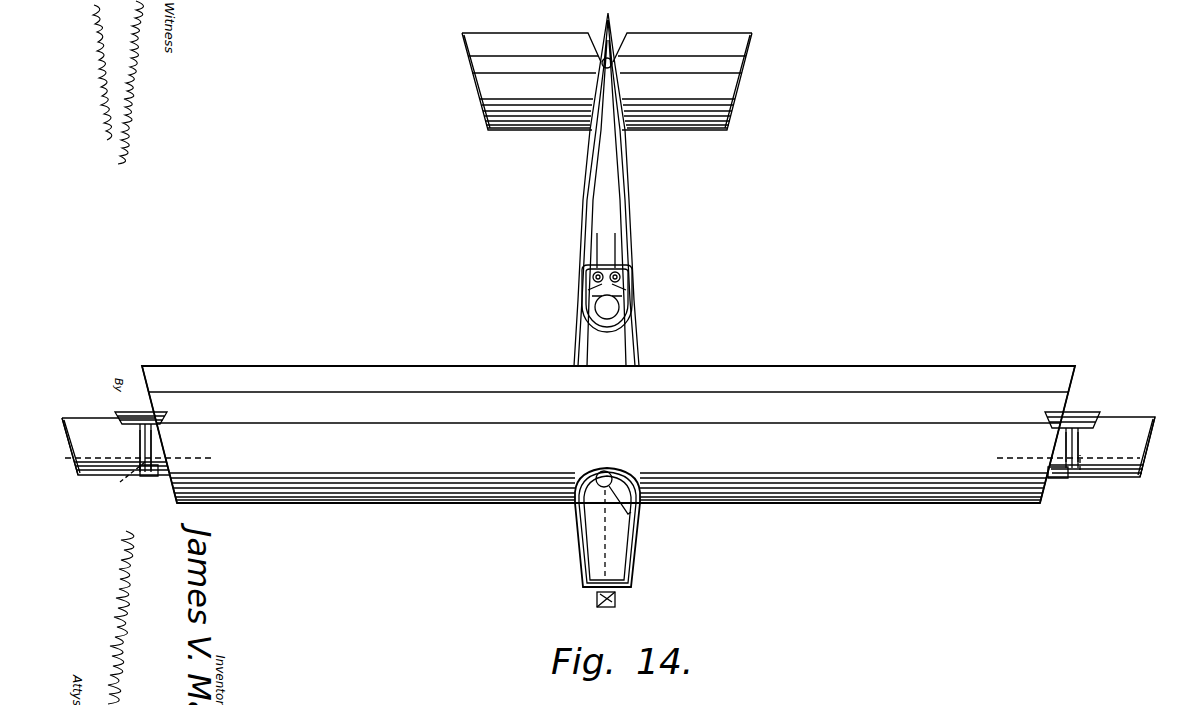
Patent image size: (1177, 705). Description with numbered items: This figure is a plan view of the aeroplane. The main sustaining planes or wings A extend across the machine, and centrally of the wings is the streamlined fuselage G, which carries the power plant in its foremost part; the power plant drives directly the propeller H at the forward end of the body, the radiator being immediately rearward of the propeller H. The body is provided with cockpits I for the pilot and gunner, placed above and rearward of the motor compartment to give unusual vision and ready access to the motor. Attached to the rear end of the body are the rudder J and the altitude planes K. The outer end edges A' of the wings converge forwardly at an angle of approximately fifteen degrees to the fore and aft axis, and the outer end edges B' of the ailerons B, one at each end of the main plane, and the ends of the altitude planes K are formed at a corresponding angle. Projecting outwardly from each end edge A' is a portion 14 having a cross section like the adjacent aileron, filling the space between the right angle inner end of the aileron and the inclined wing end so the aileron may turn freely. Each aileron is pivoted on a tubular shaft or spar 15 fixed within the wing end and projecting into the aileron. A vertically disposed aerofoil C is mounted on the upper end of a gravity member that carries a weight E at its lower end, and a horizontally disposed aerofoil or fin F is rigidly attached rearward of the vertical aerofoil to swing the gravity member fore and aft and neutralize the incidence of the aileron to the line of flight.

The rudder J is at (613, 26).
The altitude planes K is at (607, 81).
The cockpits I is at (632, 320).
The fuselage G is at (630, 352).
The wings A is at (608, 434).
The end edges of the wings A' is at (608, 454).
The ailerons B is at (601, 456).
The outer end edges of the ailerons B' is at (604, 440).
The vertically disposed aerofoil C is at (136, 439).
The weight E is at (120, 482).
The horizontally disposed aerofoil F is at (135, 412).
The propeller H is at (617, 600).
The portion 14 is at (157, 472).
The tubular shaft or spar 15 is at (213, 458).